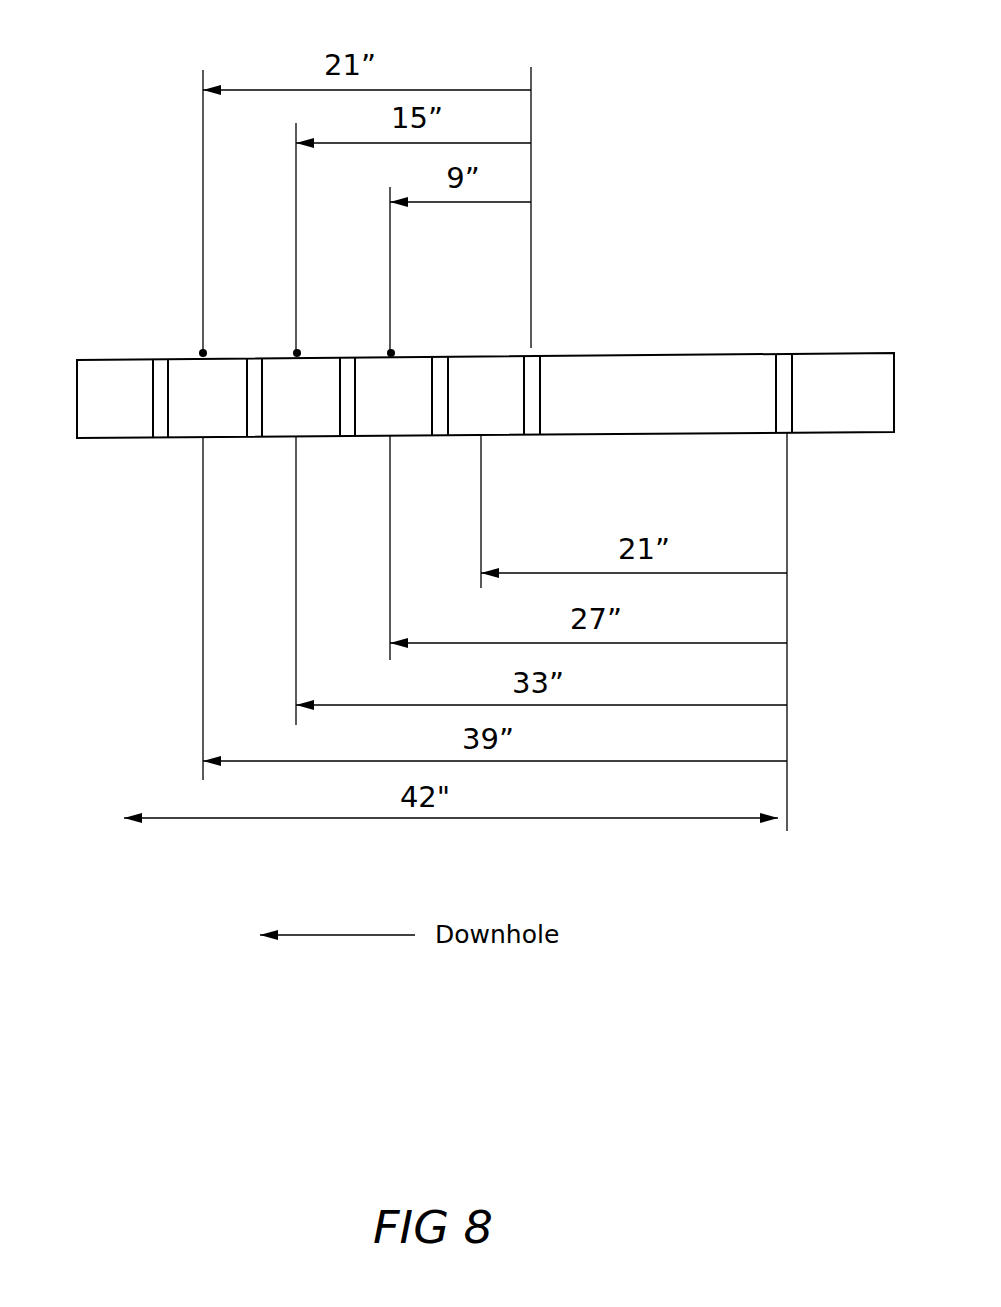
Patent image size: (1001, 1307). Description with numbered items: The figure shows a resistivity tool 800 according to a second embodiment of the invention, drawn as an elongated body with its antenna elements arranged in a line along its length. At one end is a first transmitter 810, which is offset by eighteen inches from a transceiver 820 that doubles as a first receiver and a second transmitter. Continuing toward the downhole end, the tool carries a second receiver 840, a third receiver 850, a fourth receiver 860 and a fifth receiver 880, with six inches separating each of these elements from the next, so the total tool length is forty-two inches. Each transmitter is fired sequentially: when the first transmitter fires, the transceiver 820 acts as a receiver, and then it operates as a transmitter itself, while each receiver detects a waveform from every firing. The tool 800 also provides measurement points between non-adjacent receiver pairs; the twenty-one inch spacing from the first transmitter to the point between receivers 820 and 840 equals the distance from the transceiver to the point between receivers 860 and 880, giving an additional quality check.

The tool 800 is at (118, 124).
The first transmitter T1 810 is at (792, 440).
The transceiver T2/R1 820 is at (530, 436).
The second receiver R2 840 is at (440, 437).
The third receiver R3 850 is at (347, 437).
The fourth receiver R4 860 is at (252, 438).
The fifth receiver R5 880 is at (162, 440).